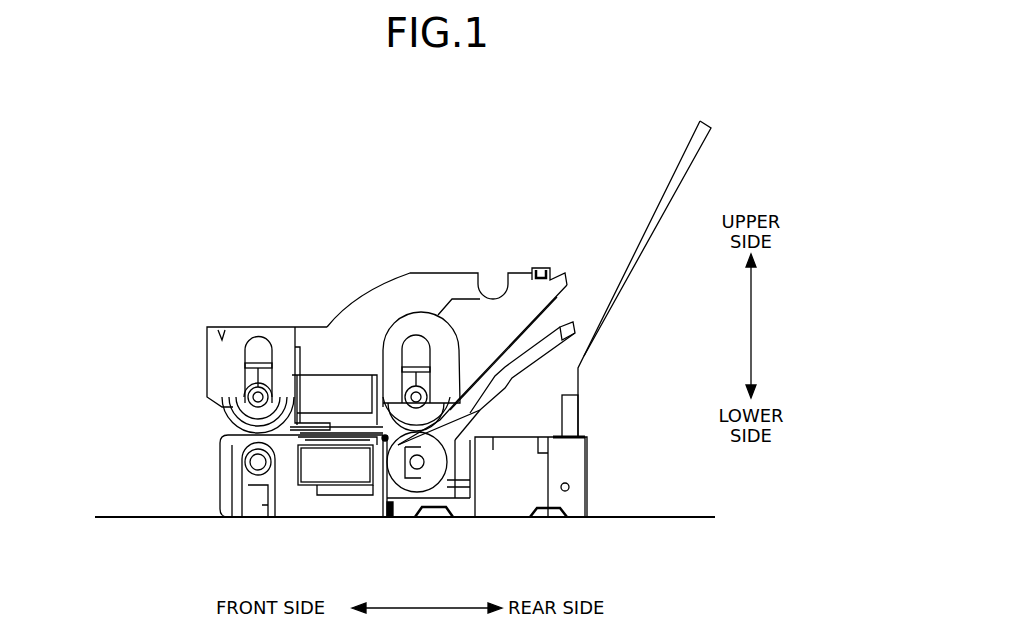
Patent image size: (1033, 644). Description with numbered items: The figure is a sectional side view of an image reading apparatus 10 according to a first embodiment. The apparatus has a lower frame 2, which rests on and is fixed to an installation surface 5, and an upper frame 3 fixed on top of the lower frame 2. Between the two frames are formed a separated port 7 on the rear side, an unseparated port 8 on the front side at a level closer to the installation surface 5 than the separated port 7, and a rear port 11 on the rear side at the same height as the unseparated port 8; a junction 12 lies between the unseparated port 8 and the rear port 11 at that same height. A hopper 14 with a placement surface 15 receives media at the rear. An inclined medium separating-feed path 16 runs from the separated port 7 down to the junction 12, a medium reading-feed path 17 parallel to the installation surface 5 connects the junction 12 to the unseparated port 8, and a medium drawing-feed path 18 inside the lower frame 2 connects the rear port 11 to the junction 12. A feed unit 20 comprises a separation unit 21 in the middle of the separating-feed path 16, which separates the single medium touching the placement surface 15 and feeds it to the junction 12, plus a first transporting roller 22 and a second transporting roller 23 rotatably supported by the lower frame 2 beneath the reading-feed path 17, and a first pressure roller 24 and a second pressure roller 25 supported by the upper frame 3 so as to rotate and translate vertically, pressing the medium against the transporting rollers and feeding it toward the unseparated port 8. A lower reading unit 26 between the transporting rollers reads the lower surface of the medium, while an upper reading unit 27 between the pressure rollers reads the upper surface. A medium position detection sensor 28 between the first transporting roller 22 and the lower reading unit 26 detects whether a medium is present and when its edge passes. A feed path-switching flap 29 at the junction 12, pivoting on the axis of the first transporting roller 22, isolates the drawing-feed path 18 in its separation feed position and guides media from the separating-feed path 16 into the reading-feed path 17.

The lower frame 2 is at (220, 482).
The upper frame 3 is at (207, 360).
The installation surface 5 is at (662, 516).
The separated port 7 is at (557, 312).
The unseparated port 8 is at (230, 425).
The image reading apparatus 10 is at (600, 102).
The rear port 11 is at (586, 436).
The junction 12 is at (452, 403).
The hopper 14 is at (657, 232).
The placement surface 15 is at (665, 182).
The medium separating-feed path 16 is at (470, 365).
The medium reading-feed path 17 is at (280, 423).
The medium drawing-feed path 18 is at (540, 423).
The feed unit 20 is at (487, 482).
The separation unit 21 is at (524, 315).
The first transporting roller 22 is at (412, 512).
The second transporting roller 23 is at (258, 492).
The first pressure roller 24 is at (414, 339).
The second pressure roller 25 is at (257, 363).
The lower reading unit 26 is at (327, 491).
The upper reading unit 27 is at (340, 377).
The medium position detection sensor 28 is at (362, 452).
The feed path-switching flap 29 is at (468, 448).